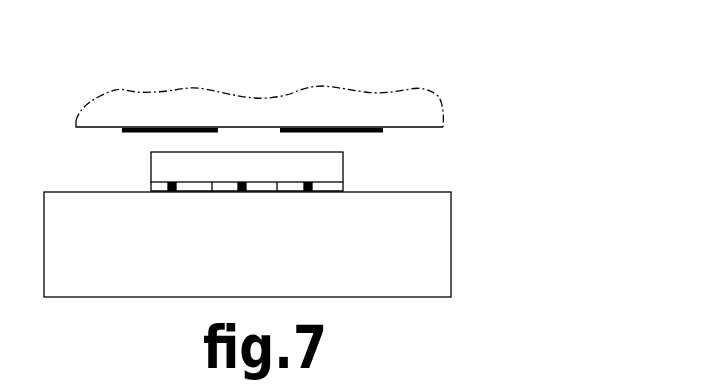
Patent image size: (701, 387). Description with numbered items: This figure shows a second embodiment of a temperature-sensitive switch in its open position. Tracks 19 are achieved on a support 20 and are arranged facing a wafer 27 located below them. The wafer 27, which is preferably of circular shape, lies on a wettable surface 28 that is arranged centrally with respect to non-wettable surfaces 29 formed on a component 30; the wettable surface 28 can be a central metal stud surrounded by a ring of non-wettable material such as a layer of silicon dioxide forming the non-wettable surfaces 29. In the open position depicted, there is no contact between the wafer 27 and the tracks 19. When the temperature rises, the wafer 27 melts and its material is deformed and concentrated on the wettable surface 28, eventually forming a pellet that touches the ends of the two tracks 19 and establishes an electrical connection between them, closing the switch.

The tracks 19 is at (300, 128).
The support 20 is at (422, 107).
The wafer 27 is at (343, 165).
The wettable surface 28 is at (238, 192).
The non-wettable surfaces 29 is at (174, 192).
The component 30 is at (423, 280).